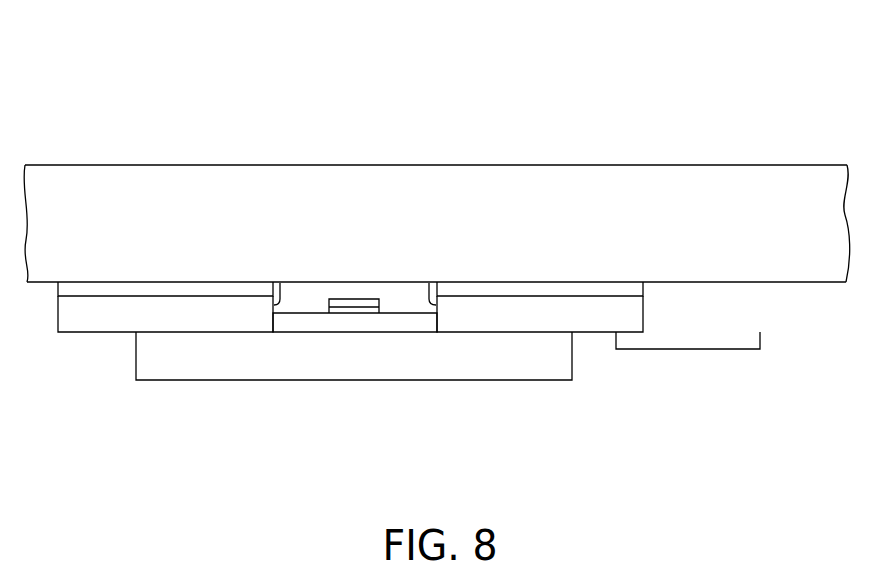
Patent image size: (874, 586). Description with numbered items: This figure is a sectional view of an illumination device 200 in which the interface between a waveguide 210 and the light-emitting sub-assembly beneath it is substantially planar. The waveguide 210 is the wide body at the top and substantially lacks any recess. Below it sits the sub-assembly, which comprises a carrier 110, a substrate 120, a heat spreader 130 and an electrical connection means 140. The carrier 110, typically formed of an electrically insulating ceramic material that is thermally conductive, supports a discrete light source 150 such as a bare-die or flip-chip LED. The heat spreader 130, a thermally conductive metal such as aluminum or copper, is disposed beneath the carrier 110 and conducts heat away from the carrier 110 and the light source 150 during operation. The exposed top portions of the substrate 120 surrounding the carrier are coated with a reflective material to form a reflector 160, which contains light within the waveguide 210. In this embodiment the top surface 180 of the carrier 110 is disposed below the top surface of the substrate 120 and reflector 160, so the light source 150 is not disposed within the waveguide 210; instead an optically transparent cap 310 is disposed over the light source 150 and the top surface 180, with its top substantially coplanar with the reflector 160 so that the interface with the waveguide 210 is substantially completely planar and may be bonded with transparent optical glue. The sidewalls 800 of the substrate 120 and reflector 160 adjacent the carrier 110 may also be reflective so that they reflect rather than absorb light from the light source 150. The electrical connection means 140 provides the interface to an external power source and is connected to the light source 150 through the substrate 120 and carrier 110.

The illumination device 200 is at (134, 84).
The waveguide 210 is at (791, 185).
The reflector 160 is at (644, 288).
The substrate 120 is at (586, 318).
The carrier 110 is at (315, 322).
The discrete light source 150 is at (355, 307).
The heat spreader 130 is at (482, 360).
The electrical connection means 140 is at (760, 341).
The sidewalls 800 is at (282, 290).
The top surface of carrier 180 is at (298, 312).
The optically transparent cap 310 is at (400, 302).